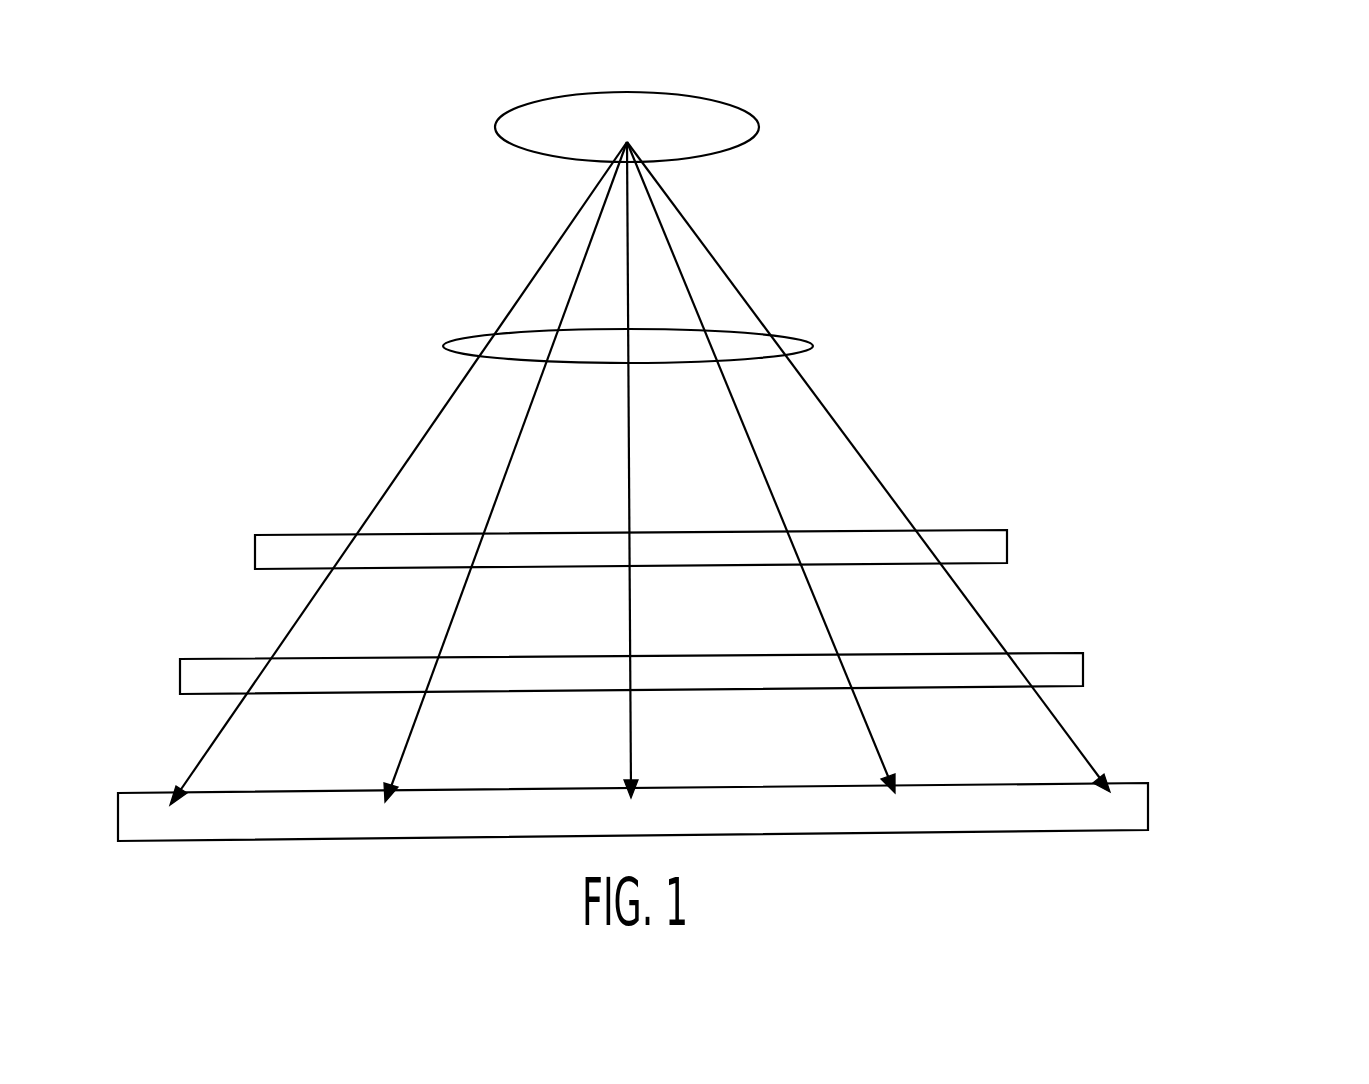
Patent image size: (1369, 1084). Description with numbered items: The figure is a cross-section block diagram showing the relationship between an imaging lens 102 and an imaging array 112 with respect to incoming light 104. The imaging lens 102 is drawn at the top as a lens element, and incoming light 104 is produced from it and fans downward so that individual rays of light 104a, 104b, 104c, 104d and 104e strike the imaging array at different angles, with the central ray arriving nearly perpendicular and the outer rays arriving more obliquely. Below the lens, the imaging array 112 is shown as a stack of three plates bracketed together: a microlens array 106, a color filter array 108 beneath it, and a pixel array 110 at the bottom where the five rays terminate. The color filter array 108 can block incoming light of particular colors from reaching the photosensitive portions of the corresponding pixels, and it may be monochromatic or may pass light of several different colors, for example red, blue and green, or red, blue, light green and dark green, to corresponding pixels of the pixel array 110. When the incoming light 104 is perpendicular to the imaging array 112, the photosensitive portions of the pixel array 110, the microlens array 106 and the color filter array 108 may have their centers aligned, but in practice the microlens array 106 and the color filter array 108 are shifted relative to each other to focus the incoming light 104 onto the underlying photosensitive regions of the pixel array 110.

The imaging lens 102 is at (760, 128).
The incoming light 104 is at (813, 343).
The ray of light 104a is at (430, 425).
The ray of light 104b is at (502, 483).
The ray of light 104c is at (630, 422).
The ray of light 104d is at (770, 485).
The ray of light 104e is at (897, 500).
The microlens array 106 is at (1007, 545).
The color filter array 108 is at (1083, 665).
The pixel array 110 is at (1148, 808).
The imaging array 112 is at (1279, 845).